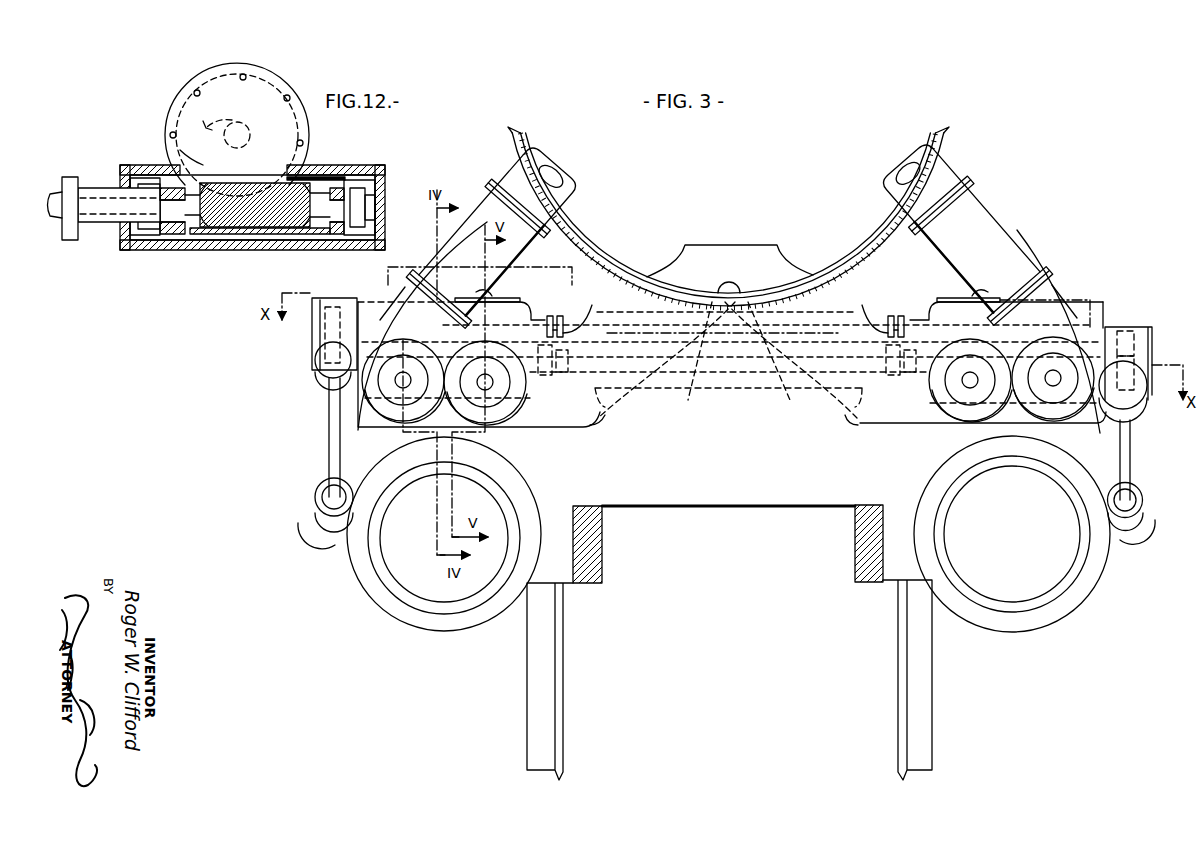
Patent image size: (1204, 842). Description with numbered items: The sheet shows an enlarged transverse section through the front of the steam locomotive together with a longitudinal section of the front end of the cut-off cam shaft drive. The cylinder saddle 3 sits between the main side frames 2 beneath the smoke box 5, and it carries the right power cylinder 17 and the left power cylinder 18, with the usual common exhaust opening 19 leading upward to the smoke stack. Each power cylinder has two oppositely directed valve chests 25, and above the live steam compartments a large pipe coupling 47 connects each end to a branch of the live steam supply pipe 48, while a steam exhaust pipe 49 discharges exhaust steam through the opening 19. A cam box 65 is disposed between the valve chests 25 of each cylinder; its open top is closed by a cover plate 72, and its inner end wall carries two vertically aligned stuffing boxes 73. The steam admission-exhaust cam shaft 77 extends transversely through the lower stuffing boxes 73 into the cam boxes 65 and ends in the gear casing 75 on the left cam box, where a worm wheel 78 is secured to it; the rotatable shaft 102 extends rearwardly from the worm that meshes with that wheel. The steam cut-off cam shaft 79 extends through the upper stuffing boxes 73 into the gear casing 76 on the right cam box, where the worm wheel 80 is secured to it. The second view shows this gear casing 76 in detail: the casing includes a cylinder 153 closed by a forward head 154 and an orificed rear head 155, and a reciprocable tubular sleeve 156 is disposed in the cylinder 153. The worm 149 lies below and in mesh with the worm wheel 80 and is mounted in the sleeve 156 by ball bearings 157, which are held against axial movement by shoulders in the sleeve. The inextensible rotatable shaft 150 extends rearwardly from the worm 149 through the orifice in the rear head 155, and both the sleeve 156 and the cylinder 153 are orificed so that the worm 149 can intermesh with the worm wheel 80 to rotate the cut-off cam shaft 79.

In FIG. 3, the main side frames 2 is at (604, 556).
In FIG. 3, the cylinder saddle 3 is at (770, 498).
In FIG. 3, the smoke box 5 is at (948, 142).
In FIG. 3, the right power cylinder 17 is at (444, 534).
In FIG. 3, the left power cylinder 18 is at (1012, 534).
In FIG. 3, the common exhaust opening 19 is at (745, 246).
In FIG. 3, the valve chests 25 is at (387, 313).
In FIG. 3, the pipe coupling 47 is at (390, 280).
In FIG. 3, the live steam supply pipe 48 is at (985, 228).
In FIG. 3, the steam exhaust pipe 49 is at (568, 425).
In FIG. 3, the cam box 65 is at (520, 300).
In FIG. 3, the cover plate 72 is at (478, 290).
In FIG. 3, the stuffing boxes 73 is at (533, 390).
In FIG. 3, the gear casing 75 is at (1150, 330).
In FIG. 12, the gear casing 76 is at (307, 133).
In FIG. 3, the gear casing 76 is at (352, 300).
In FIG. 3, the steam admission-exhaust cam shaft 77 is at (727, 363).
In FIG. 3, the worm wheel 78 is at (1125, 323).
In FIG. 12, the steam cut-off cam shaft 79 is at (227, 122).
In FIG. 3, the steam cut-off cam shaft 79 is at (592, 330).
In FIG. 12, the worm wheel 80 is at (180, 112).
In FIG. 3, the worm wheel 80 is at (320, 372).
In FIG. 3, the rotatable shaft 102 is at (1132, 455).
In FIG. 12, the worm 149 is at (228, 213).
In FIG. 12, the rotatable shaft 150 is at (100, 222).
In FIG. 3, the rotatable shaft 150 is at (329, 437).
In FIG. 12, the cylinder 153 is at (270, 240).
In FIG. 12, the forward head 154 is at (386, 170).
In FIG. 12, the rear head 155 is at (120, 170).
In FIG. 12, the tubular sleeve 156 is at (255, 243).
In FIG. 12, the ball bearings 157 is at (172, 234).